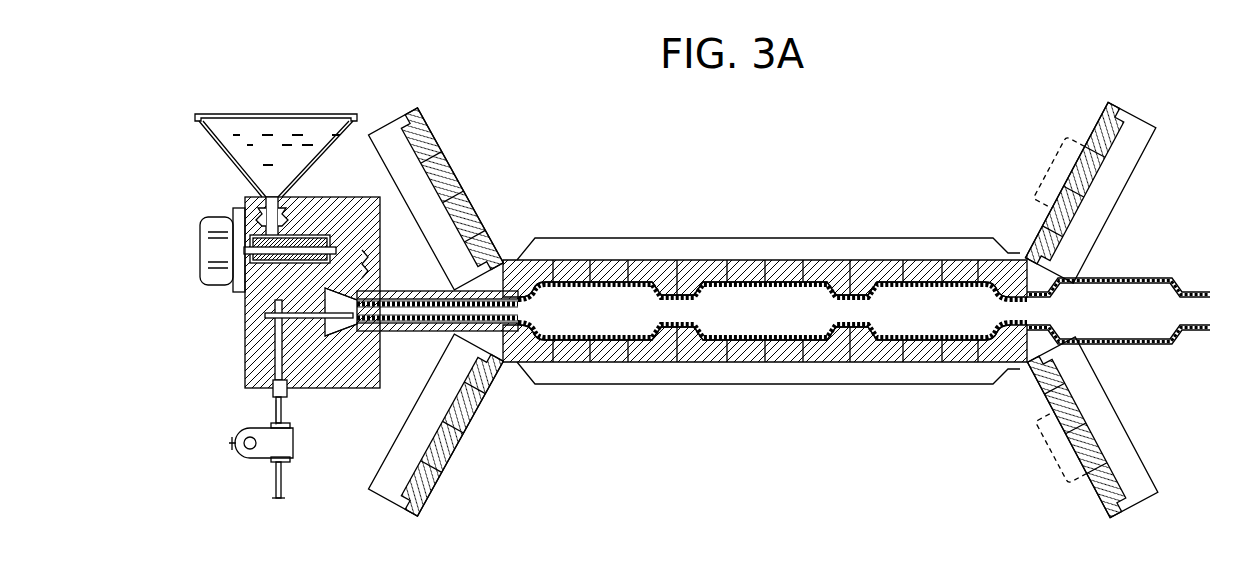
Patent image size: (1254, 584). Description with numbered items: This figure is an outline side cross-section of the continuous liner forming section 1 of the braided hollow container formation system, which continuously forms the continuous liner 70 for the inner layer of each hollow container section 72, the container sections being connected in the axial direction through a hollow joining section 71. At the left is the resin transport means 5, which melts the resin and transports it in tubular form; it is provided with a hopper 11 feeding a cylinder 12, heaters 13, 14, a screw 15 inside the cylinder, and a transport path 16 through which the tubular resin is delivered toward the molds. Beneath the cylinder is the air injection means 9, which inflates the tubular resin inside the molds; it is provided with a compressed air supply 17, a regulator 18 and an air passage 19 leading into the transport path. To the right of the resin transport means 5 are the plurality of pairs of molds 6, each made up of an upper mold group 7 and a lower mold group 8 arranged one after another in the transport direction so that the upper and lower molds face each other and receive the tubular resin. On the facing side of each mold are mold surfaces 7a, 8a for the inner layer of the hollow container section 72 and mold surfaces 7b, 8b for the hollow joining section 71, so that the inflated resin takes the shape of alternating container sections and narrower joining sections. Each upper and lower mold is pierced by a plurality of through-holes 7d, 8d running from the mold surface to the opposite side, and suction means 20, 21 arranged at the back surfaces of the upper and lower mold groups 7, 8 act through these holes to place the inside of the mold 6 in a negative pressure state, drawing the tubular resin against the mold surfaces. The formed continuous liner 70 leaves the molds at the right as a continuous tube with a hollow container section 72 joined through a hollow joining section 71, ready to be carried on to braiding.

The continuous liner forming section 1 is at (740, 123).
The resin transport means 5 is at (233, 180).
The molds 6 is at (932, 184).
The upper mold group 7 is at (441, 117).
The mold surface 7a is at (716, 288).
The mold surface 7b is at (667, 289).
The through-holes 7d is at (760, 286).
The lower mold group 8 is at (440, 520).
The mold surface 8a is at (725, 340).
The mold surface 8b is at (695, 342).
The through-holes 8d is at (779, 343).
The air injection means 9 is at (297, 421).
The hopper 11 is at (222, 130).
The cylinder 12 is at (322, 226).
The heater 13 is at (292, 207).
The heater 14 is at (372, 259).
The screw 15 is at (246, 295).
The transport path 16 is at (398, 291).
The compressed air supply 17 is at (276, 489).
The regulator 18 is at (240, 430).
The air passage 19 is at (278, 358).
The suction means 20 is at (568, 245).
The suction means 21 is at (550, 378).
The continuous liner 70 is at (1237, 217).
The hollow joining section 71 is at (1200, 278).
The hollow container section 72 is at (1166, 278).